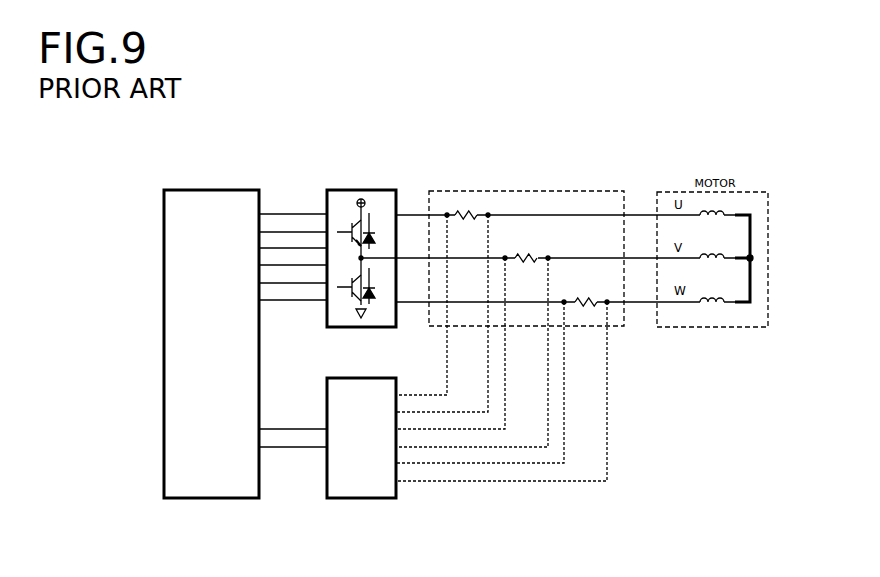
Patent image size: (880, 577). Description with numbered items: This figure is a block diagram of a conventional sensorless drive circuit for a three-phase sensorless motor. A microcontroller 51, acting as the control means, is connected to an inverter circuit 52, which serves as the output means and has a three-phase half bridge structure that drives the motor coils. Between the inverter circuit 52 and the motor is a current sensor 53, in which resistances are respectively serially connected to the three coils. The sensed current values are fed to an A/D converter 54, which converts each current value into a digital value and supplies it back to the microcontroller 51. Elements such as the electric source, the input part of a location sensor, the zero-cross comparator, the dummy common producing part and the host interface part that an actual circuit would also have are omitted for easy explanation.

The MPU 51 is at (252, 188).
The inverter circuit 52 is at (392, 190).
The current sensor 53 is at (583, 191).
The A/D converter 54 is at (394, 378).